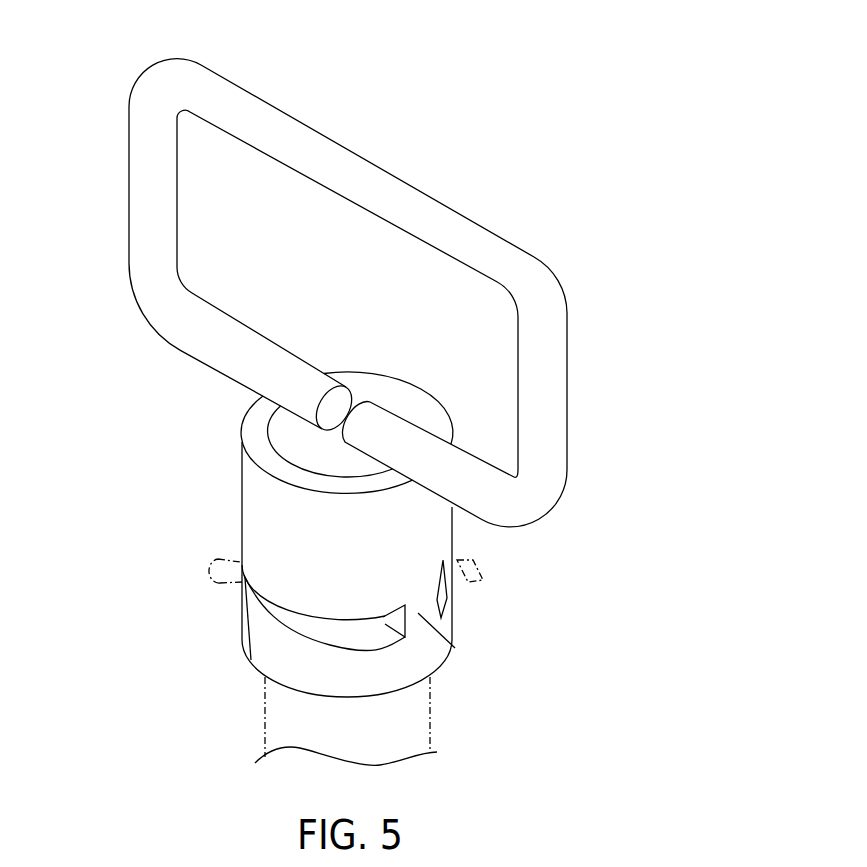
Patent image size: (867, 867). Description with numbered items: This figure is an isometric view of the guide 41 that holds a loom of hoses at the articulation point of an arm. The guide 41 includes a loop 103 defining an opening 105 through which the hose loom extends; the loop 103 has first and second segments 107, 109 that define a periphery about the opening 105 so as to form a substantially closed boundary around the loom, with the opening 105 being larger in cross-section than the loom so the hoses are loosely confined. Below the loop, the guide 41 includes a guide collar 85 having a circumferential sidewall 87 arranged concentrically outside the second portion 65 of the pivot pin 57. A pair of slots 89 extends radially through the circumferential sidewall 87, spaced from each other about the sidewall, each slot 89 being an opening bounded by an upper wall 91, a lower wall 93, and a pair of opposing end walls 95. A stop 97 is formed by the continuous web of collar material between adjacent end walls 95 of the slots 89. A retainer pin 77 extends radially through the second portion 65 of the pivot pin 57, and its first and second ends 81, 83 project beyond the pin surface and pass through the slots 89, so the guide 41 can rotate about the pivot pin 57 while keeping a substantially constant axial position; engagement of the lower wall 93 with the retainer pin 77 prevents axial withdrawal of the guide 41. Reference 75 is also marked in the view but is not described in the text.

The guide 41 is at (443, 75).
The loop 103 is at (408, 170).
The opening 105 is at (220, 222).
The first segment 107 is at (503, 250).
The second segment 109 is at (180, 76).
The guide collar 85 is at (212, 454).
The circumferential sidewall 87 is at (440, 530).
The slot 89 is at (268, 595).
The upper wall 91 is at (318, 612).
The lower wall 93 is at (292, 626).
The end wall 95 is at (444, 575).
The stop 97 is at (455, 648).
The pin receiving direction 75 is at (178, 565).
The retainer pin 77 is at (226, 557).
The first end 81 is at (477, 580).
The second end 83 is at (217, 588).
The second portion 65 is at (415, 695).
The pivot pin 57 is at (411, 727).